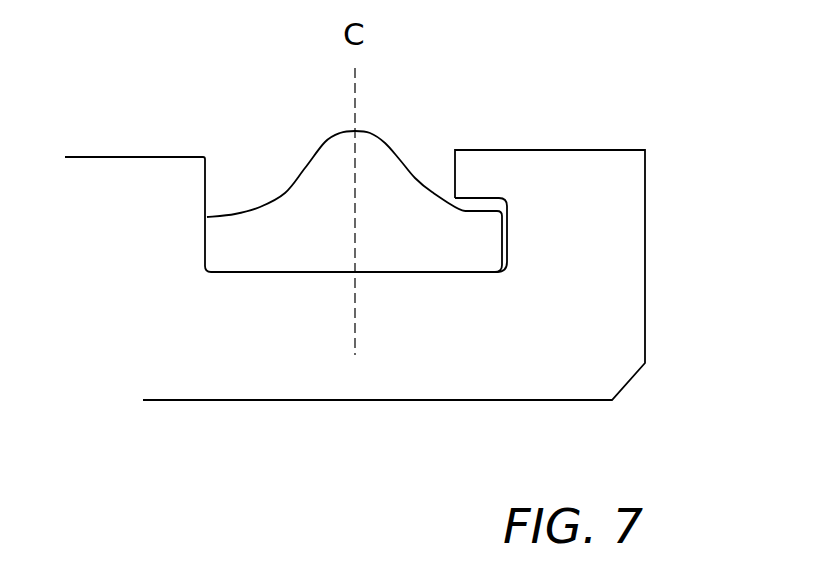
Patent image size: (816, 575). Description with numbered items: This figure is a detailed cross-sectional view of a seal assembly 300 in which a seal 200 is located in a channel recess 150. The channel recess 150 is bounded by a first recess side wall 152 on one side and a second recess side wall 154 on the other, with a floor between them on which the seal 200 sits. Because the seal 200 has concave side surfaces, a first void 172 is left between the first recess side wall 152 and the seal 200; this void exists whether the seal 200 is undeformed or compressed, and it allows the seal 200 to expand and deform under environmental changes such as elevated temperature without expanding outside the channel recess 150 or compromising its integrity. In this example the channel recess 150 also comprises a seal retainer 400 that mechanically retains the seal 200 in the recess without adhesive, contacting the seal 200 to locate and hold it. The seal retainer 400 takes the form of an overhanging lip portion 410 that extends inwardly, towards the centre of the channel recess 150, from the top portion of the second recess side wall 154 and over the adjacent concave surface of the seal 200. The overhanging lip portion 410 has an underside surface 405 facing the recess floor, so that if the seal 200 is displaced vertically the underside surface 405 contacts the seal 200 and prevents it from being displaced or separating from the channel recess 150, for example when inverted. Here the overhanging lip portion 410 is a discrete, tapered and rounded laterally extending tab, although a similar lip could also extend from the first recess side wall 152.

The channel recess 150 is at (205, 252).
The first recess side wall 152 is at (205, 192).
The second recess side wall 154 is at (507, 230).
The first void 172 is at (274, 183).
The seal 200 is at (322, 193).
The seal assembly 300 is at (427, 110).
The seal retainer 400 is at (503, 175).
The underside surface 405 is at (477, 198).
The overhanging lip portion 410 is at (470, 170).